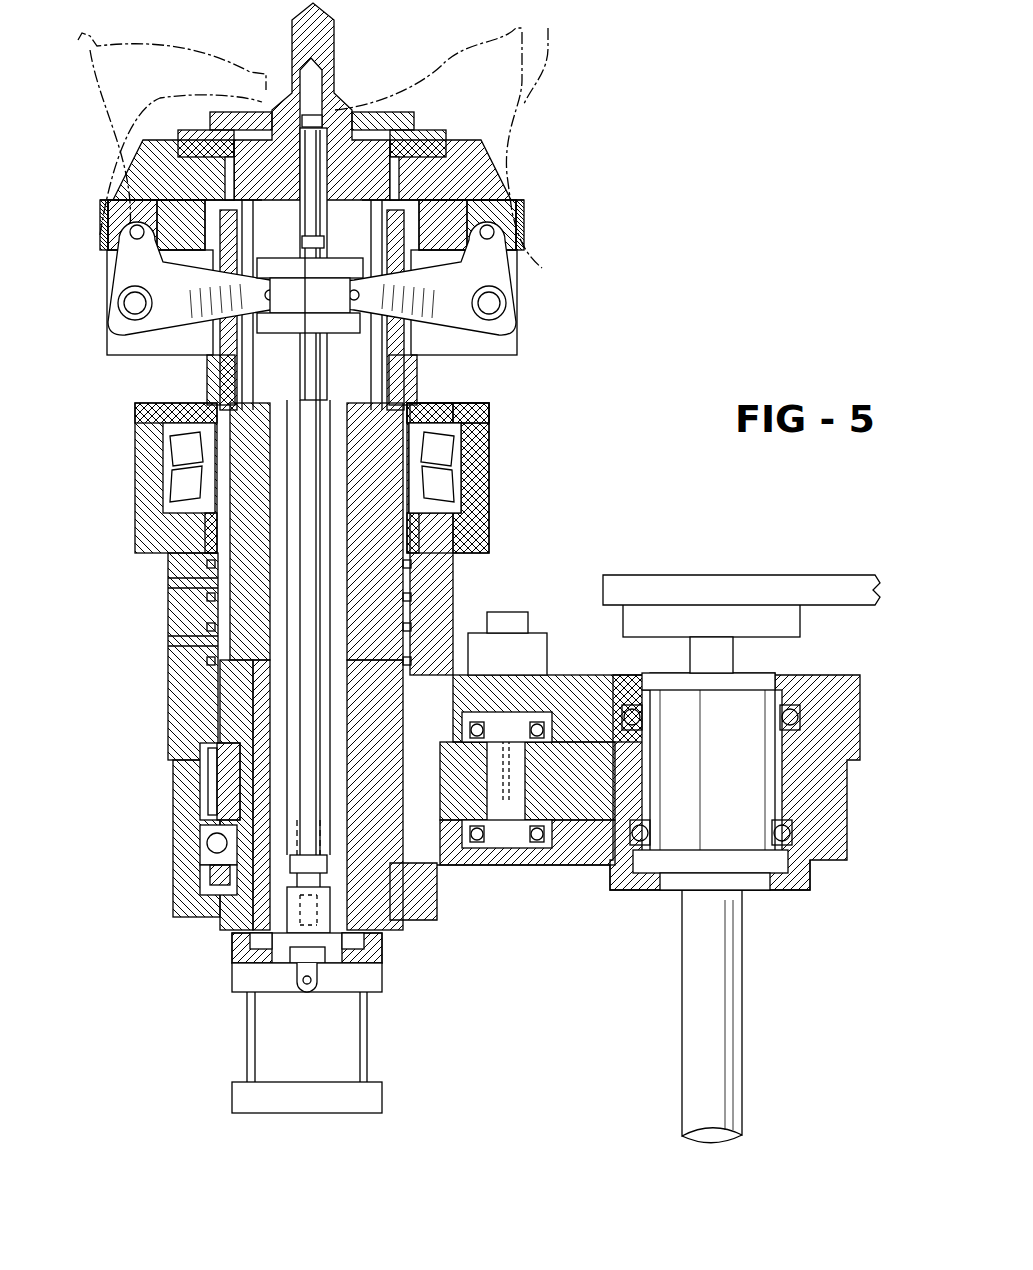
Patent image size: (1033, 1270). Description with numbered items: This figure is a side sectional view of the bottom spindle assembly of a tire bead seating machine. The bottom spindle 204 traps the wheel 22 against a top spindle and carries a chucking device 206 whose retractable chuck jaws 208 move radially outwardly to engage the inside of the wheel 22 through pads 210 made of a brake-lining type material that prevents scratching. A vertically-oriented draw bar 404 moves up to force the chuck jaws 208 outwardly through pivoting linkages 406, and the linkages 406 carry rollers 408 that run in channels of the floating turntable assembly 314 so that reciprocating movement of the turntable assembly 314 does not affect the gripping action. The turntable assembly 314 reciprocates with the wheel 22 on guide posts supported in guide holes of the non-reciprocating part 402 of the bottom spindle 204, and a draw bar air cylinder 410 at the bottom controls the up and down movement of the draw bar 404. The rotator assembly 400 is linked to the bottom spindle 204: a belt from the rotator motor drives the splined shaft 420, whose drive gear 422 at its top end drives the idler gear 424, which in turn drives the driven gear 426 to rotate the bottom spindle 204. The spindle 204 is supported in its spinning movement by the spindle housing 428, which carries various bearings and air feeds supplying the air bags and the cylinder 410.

The wheel 22 is at (525, 108).
The bottom spindle 204 is at (338, 90).
The chucking device 206 is at (335, 328).
The chuck jaws 208 is at (480, 210).
The pads 210 is at (103, 215).
The floating turntable assembly 314 is at (266, 112).
The rotator assembly 400 is at (494, 866).
The non-reciprocating part of the bottom spindle 402 is at (216, 368).
The draw bar 404 is at (296, 572).
The pivoting linkages 406 is at (130, 330).
The rollers 408 is at (132, 215).
The draw bar air cylinder 410 is at (367, 1045).
The splined shaft 420 is at (736, 1047).
The drive gear 422 is at (810, 795).
The idler gear 424 is at (568, 828).
The driven gear 426 is at (210, 798).
The spindle housing 428 is at (165, 715).